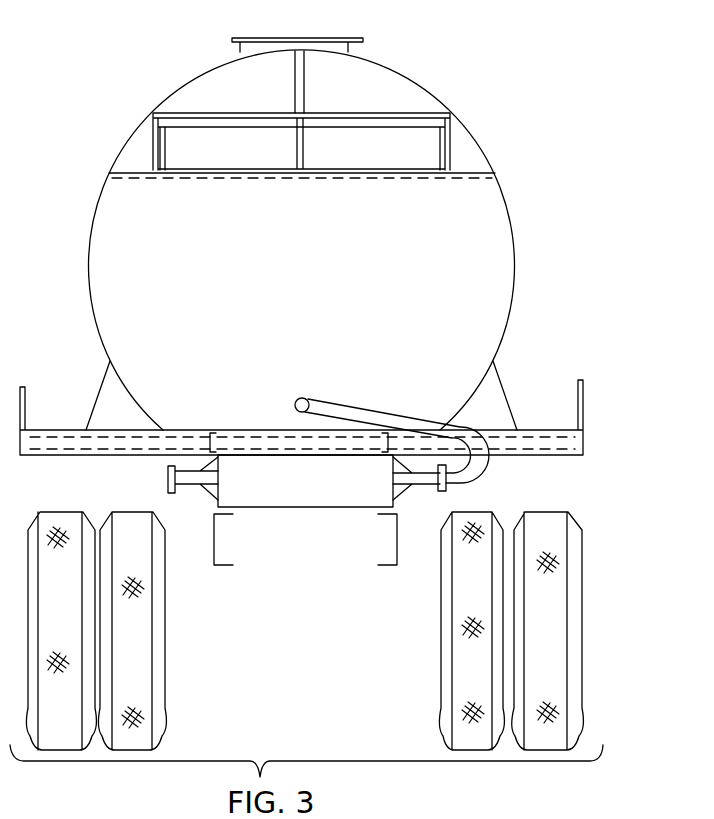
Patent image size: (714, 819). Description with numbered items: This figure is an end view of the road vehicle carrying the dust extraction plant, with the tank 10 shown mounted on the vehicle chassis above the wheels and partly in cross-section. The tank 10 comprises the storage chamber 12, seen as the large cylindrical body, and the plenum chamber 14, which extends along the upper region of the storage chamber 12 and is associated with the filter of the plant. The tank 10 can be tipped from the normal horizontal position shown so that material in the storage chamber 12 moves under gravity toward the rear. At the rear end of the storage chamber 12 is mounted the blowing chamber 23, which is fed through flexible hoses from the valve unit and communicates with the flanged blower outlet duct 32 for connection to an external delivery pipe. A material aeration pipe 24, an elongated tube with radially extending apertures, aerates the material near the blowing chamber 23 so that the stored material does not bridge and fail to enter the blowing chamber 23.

The tank 10 is at (403, 69).
The storage chamber 12 is at (467, 260).
The plenum chamber 14 is at (413, 145).
The blowing chamber 23 is at (360, 478).
The material aeration pipe 24 is at (309, 402).
The blower outlet duct 32 is at (425, 475).